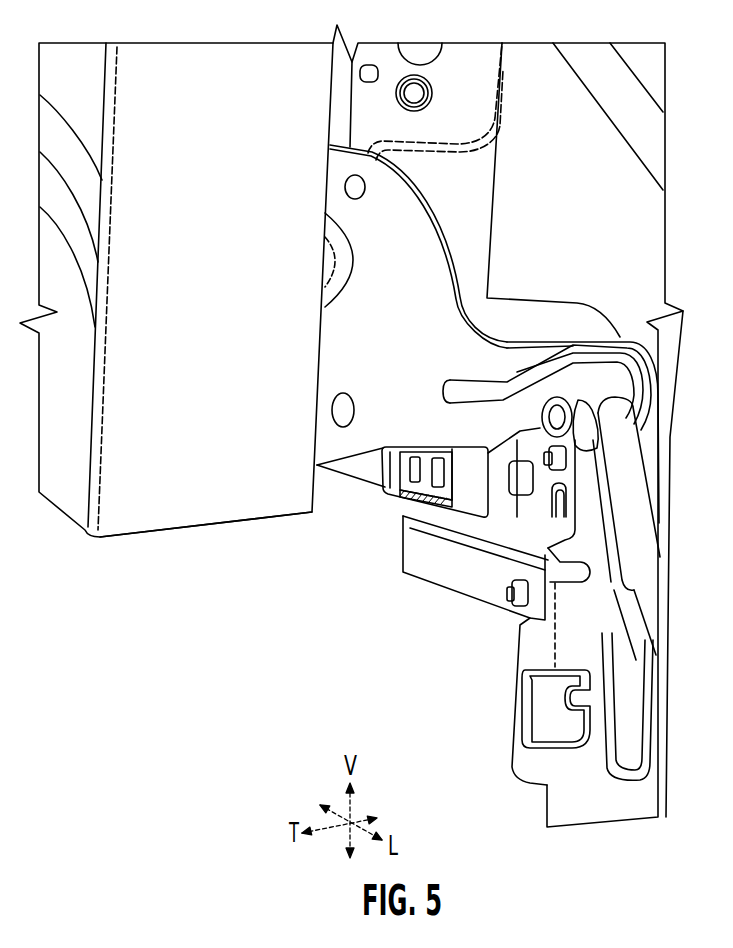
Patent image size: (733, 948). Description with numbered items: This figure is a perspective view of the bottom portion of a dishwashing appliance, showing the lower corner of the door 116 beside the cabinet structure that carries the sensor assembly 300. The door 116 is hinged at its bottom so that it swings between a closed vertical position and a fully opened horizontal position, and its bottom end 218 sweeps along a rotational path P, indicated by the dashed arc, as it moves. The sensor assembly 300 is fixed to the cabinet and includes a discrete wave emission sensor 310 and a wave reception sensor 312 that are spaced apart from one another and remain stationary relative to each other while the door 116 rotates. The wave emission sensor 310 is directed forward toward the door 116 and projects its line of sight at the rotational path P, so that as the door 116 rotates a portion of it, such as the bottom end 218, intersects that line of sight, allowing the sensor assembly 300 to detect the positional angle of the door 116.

The door 116 is at (115, 537).
The bottom end 218 is at (210, 540).
The sensor assembly 300 is at (445, 440).
The wave emission sensor 310 is at (400, 495).
The wave reception sensor 312 is at (435, 488).
The rotational path P is at (240, 463).